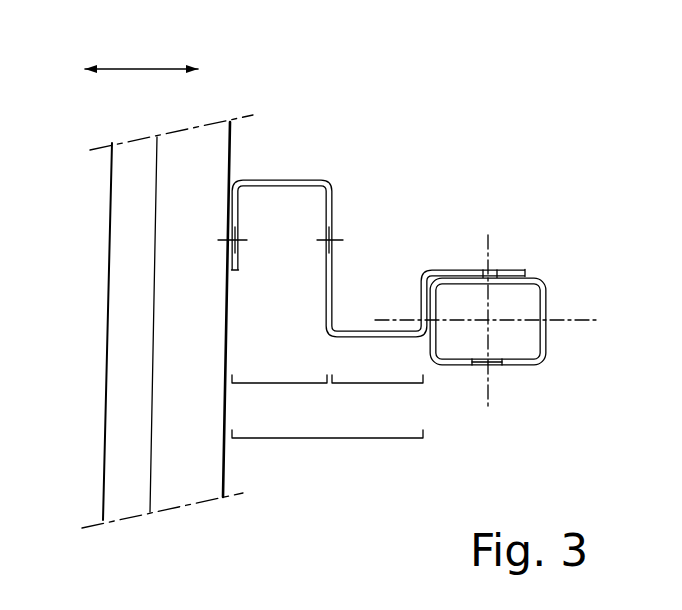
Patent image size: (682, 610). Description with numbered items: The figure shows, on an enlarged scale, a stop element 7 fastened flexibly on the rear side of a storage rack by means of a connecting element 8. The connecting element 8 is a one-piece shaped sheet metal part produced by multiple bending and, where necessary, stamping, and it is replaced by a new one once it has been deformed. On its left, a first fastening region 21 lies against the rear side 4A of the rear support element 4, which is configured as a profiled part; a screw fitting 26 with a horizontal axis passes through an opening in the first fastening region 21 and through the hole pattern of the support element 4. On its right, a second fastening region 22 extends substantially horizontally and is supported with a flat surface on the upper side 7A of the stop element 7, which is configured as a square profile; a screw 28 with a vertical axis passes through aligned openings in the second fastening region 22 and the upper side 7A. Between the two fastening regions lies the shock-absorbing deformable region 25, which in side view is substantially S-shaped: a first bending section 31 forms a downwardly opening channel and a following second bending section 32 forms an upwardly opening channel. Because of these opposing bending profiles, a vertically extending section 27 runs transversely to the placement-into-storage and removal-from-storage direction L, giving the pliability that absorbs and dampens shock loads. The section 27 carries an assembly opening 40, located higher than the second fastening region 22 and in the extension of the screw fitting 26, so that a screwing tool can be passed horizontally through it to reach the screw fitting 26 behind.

The support element 4 is at (214, 310).
The rear side of the support element 4A is at (231, 138).
The placement-into-storage and removal-from-storage direction L is at (158, 69).
The connecting element 8 is at (308, 175).
The first fastening region 21 is at (233, 212).
The screw fitting 26 is at (226, 242).
The section 27 is at (333, 210).
The assembly opening 40 is at (331, 240).
The second fastening region 22 is at (461, 272).
The screw 28 is at (496, 272).
The first bending section 31 is at (279, 395).
The second bending section 32 is at (377, 395).
The deformable region 25 is at (327, 449).
The stop element 7 is at (503, 320).
The upper side of the stop element 7A is at (533, 275).